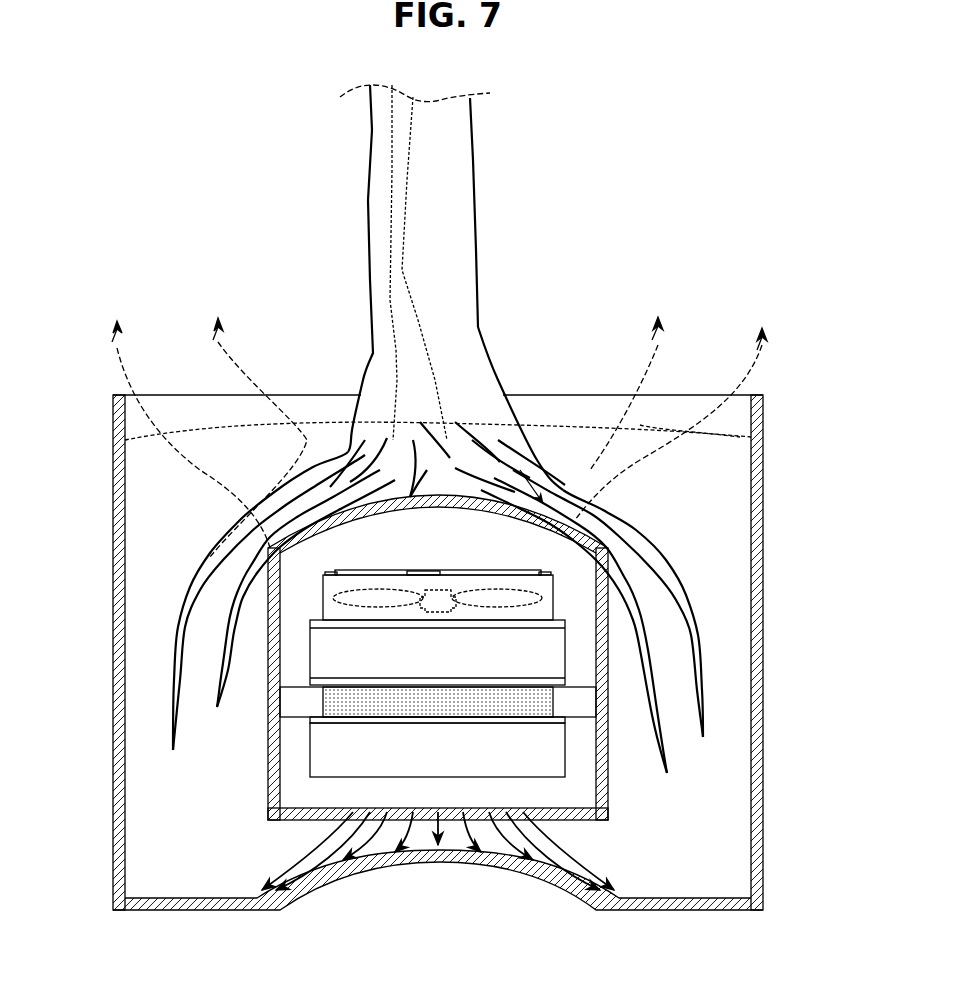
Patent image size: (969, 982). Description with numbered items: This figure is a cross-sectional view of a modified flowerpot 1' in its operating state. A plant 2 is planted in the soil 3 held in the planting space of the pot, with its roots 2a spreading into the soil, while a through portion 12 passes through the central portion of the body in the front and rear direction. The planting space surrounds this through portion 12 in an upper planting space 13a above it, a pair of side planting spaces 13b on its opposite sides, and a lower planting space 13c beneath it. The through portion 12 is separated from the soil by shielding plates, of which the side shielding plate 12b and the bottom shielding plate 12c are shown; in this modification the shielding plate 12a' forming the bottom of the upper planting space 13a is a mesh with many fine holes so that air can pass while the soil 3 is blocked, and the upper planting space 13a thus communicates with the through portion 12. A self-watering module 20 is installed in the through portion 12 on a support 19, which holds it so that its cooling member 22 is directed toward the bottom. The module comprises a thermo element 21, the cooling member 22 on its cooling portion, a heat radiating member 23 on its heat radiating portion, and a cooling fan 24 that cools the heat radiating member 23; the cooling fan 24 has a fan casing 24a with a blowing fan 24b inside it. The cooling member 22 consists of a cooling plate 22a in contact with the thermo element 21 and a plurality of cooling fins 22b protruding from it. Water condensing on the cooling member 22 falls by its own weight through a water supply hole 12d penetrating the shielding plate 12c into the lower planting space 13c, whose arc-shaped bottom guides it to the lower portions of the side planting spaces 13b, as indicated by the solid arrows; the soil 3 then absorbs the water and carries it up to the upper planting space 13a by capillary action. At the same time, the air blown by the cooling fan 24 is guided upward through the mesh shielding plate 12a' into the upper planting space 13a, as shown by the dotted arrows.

The flowerpot 1' is at (479, 652).
The plant 2 is at (478, 207).
The roots 2a is at (240, 598).
The soil 3 is at (196, 428).
The through portion 12 is at (439, 649).
The shielding plate 12a' is at (438, 456).
The shielding plate 12b is at (268, 788).
The shielding plate 12c is at (565, 822).
The water supply hole 12d is at (495, 818).
The upper planting space 13a is at (690, 487).
The side planting spaces 13b is at (168, 693).
The lower planting space 13c is at (612, 860).
The support 19 is at (577, 700).
The self-watering module 20 is at (443, 547).
The thermo element 21 is at (393, 702).
The cooling member 22 is at (443, 732).
The cooling plate 22a is at (563, 722).
The cooling fins 22b is at (547, 755).
The heat radiating member 23 is at (298, 648).
The cooling fan 24 is at (565, 597).
The fan casing 24a is at (317, 560).
The blowing fan 24b is at (532, 590).